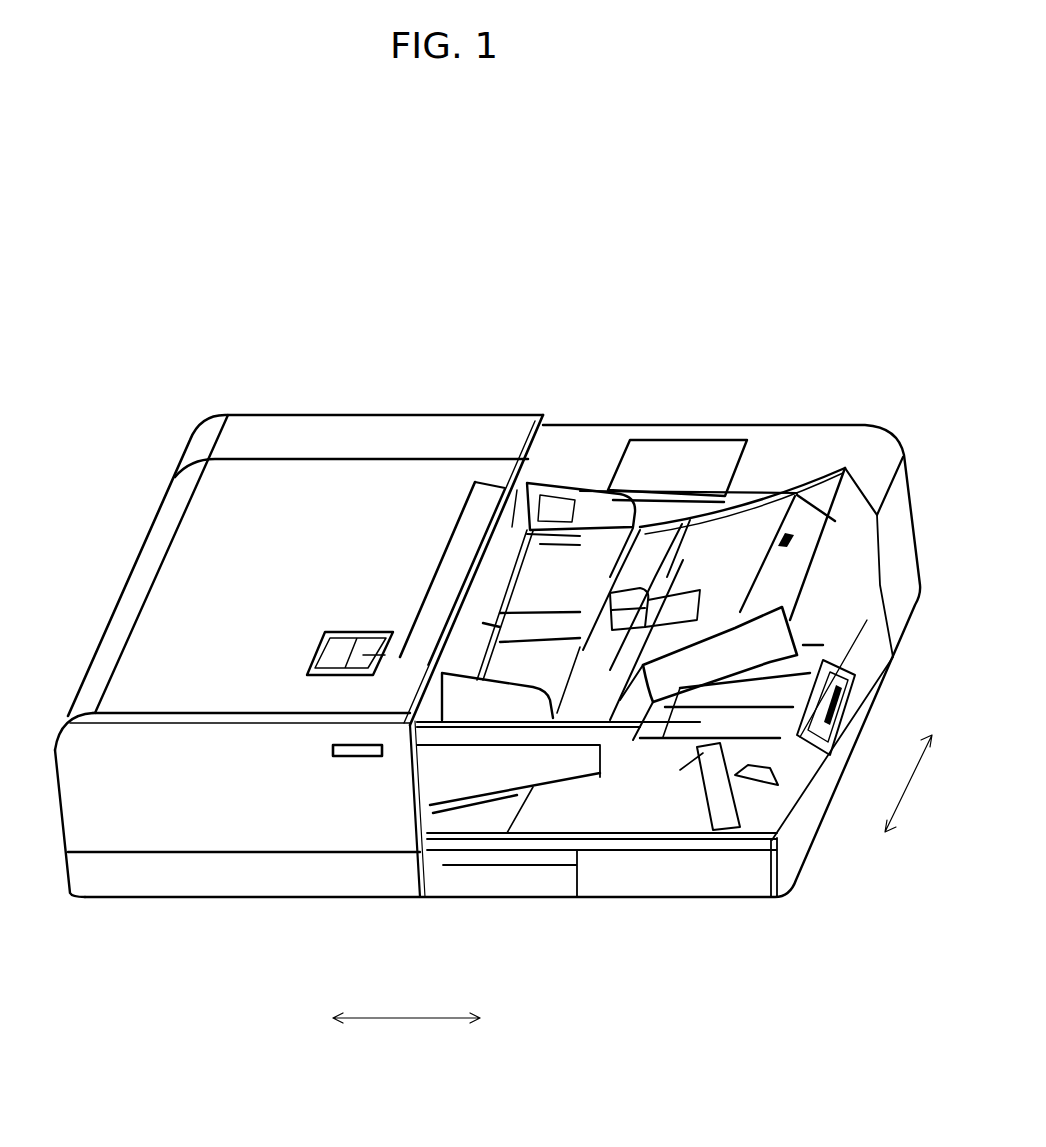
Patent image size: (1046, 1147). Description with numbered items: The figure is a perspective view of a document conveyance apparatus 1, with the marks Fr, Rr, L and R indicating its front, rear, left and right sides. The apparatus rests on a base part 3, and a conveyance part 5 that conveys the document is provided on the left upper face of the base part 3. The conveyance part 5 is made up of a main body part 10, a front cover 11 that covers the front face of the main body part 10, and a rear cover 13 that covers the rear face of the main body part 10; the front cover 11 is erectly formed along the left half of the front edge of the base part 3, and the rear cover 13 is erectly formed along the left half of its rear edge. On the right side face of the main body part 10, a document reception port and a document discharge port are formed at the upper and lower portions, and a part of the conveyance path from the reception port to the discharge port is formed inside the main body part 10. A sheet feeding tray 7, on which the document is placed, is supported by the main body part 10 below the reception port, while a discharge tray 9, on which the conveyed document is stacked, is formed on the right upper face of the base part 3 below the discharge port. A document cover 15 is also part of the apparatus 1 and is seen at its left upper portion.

The document conveyance apparatus 1 is at (367, 360).
The base part 3 is at (360, 873).
The conveyance part 5 is at (287, 414).
The sheet feeding tray 7 is at (748, 540).
The discharge tray 9 is at (744, 690).
The main body part 10 is at (365, 524).
The front cover 11 is at (265, 807).
The rear cover 13 is at (442, 430).
The document cover 15 is at (218, 522).